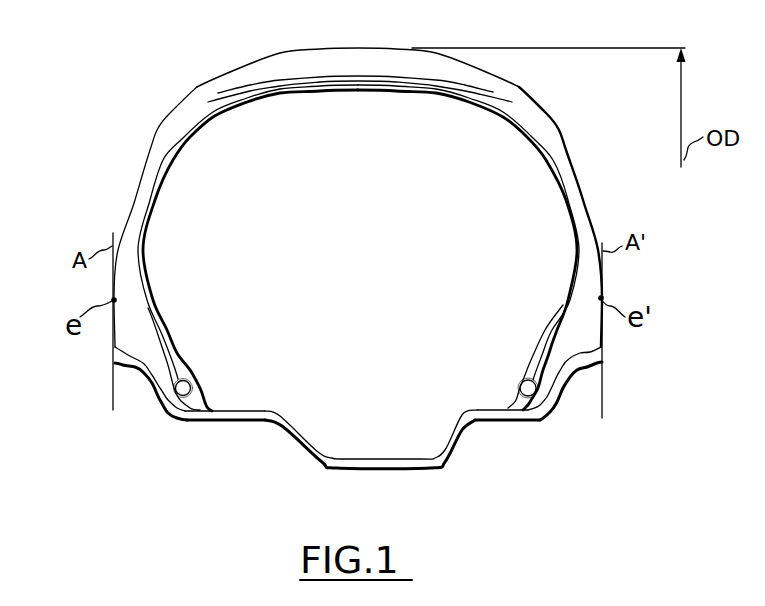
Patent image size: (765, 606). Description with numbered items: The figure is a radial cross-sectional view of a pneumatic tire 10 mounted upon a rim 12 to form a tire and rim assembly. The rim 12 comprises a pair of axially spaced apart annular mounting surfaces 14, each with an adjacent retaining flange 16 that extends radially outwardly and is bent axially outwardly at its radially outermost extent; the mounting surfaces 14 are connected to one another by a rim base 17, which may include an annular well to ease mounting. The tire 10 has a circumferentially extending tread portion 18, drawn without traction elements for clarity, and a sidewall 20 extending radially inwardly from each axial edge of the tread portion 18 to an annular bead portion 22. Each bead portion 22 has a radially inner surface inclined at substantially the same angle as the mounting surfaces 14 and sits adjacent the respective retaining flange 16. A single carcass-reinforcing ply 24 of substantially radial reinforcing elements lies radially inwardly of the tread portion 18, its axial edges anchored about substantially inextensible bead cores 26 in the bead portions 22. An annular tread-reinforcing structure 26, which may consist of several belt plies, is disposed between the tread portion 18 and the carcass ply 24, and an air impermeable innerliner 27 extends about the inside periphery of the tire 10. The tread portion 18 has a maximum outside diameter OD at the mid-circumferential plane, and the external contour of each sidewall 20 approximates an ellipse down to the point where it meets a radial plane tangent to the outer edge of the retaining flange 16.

The pneumatic tire 10 is at (138, 55).
The rim 12 is at (325, 478).
The annular mounting surfaces 14 is at (178, 420).
The retaining flange 16 is at (156, 381).
The rim base 17 is at (403, 470).
The tread portion 18 is at (287, 65).
The sidewall 20 is at (122, 283).
The bead portion 22 is at (199, 395).
The carcass-reinforcing ply 24 is at (141, 254).
The bead cores / tread-reinforcing structure 26 is at (412, 75).
The innerliner 27 is at (158, 303).